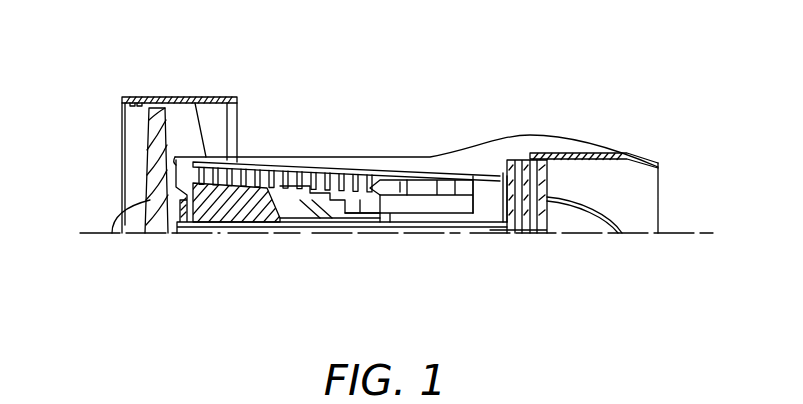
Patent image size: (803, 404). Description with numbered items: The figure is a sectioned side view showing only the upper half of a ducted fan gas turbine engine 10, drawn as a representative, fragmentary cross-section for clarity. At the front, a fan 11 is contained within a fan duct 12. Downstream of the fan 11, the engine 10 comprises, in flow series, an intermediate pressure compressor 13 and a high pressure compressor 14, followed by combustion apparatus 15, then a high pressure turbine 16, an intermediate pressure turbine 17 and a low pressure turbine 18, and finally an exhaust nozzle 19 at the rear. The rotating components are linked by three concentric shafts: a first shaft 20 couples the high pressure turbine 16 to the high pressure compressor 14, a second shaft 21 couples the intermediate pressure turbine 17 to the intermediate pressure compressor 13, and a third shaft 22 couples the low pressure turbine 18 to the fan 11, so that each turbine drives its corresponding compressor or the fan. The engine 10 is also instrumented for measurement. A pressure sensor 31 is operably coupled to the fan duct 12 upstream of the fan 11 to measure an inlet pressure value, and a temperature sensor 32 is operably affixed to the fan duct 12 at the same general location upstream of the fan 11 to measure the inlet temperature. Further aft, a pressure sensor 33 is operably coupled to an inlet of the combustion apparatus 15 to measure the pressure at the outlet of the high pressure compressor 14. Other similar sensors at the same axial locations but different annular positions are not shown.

The ducted fan gas turbine engine 10 is at (332, 91).
The fan 11 is at (153, 133).
The fan duct 12 is at (185, 97).
The intermediate pressure compressor 13 is at (236, 203).
The high pressure compressor 14 is at (345, 218).
The combustion apparatus 15 is at (428, 170).
The high pressure turbine 16 is at (468, 173).
The intermediate pressure turbine 17 is at (498, 168).
The low pressure turbine 18 is at (547, 183).
The exhaust nozzle 19 is at (643, 194).
The first shaft 20 is at (433, 222).
The second shaft 21 is at (368, 222).
The third shaft 22 is at (260, 228).
The pressure sensor 31 is at (130, 100).
The temperature sensor 32 is at (140, 100).
The pressure sensor 33 is at (387, 160).